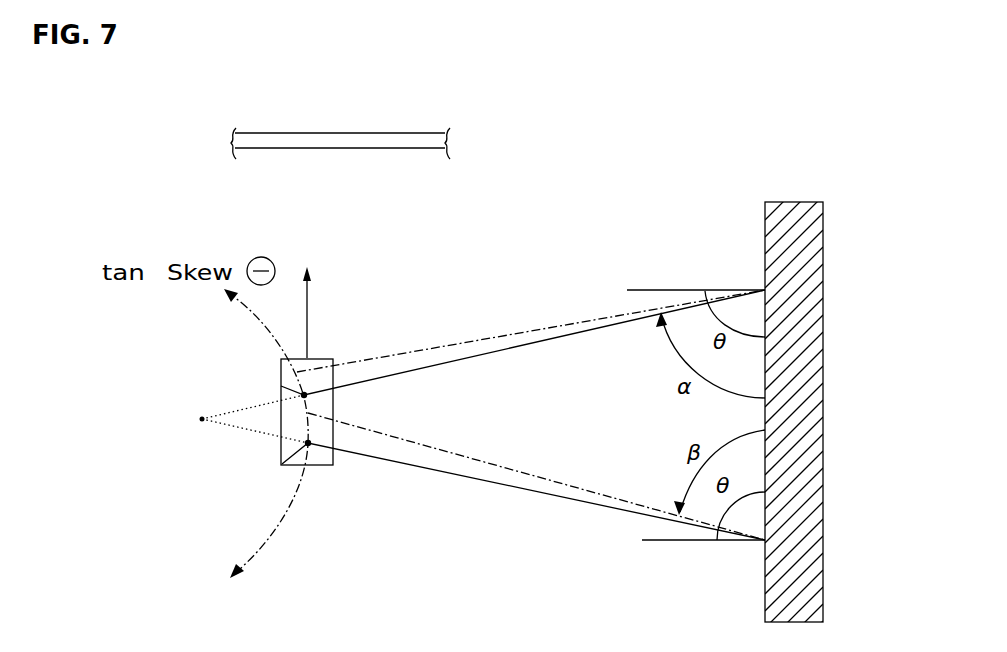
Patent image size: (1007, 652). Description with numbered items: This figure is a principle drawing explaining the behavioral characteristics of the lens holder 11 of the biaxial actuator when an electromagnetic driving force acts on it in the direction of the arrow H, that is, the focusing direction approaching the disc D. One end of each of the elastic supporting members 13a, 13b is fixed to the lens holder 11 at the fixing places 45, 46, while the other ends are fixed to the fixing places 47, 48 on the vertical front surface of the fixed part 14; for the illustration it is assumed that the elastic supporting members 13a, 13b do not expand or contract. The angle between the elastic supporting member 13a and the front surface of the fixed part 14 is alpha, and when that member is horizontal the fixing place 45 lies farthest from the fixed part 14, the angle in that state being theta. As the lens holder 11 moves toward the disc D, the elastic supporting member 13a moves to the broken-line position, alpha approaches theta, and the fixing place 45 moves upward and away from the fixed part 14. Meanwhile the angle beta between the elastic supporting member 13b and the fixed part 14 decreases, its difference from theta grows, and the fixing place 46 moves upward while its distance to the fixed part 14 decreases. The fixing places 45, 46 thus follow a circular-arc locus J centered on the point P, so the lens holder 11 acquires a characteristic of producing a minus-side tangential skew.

The lens holder 11 is at (321, 453).
The elastic supporting member 13a is at (419, 347).
The elastic supporting member 13b is at (455, 455).
The fixed part 14 is at (785, 222).
The fixing place 45 is at (282, 386).
The fixing place 46 is at (282, 462).
The fixing place 47 is at (765, 290).
The fixing place 48 is at (765, 543).
The disc D is at (413, 133).
The arrow H is at (307, 308).
The locus J is at (283, 357).
The point P is at (248, 424).